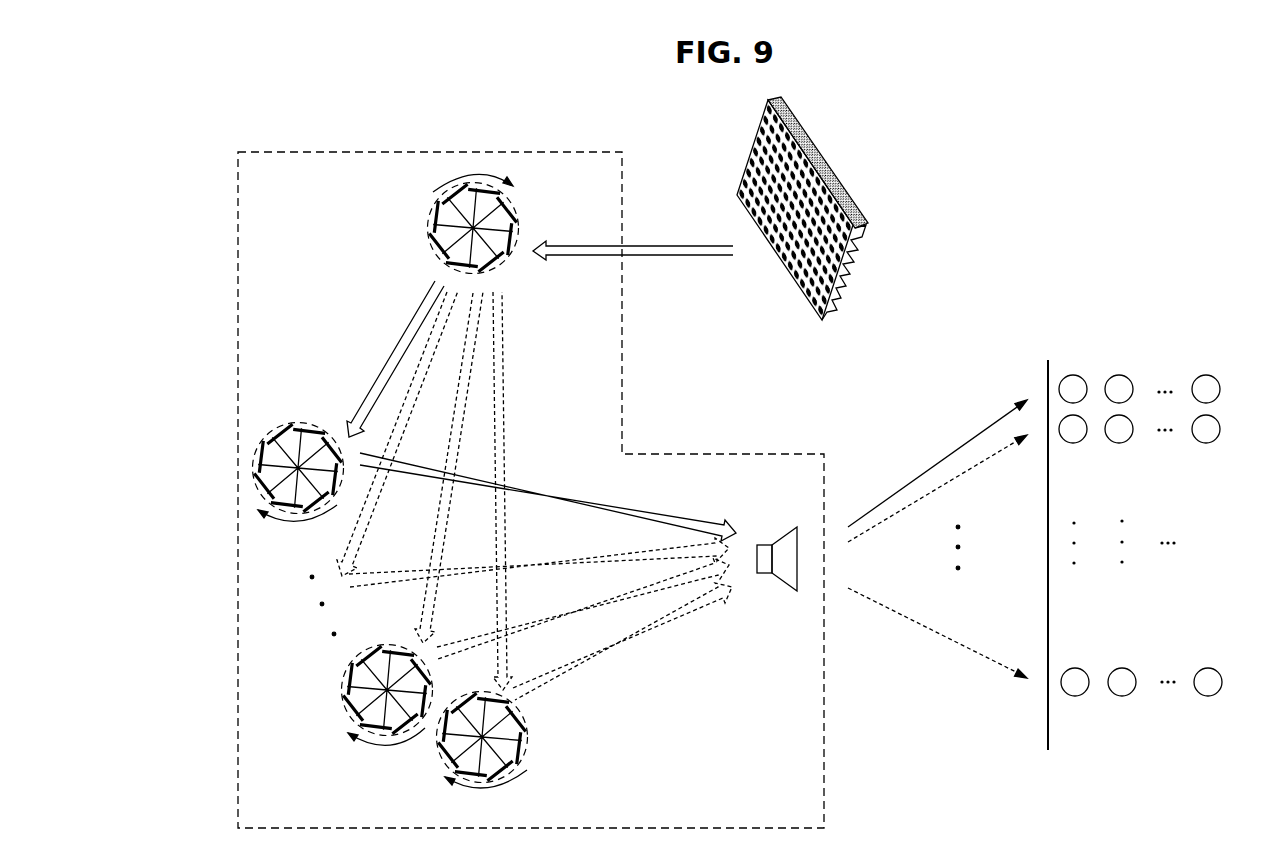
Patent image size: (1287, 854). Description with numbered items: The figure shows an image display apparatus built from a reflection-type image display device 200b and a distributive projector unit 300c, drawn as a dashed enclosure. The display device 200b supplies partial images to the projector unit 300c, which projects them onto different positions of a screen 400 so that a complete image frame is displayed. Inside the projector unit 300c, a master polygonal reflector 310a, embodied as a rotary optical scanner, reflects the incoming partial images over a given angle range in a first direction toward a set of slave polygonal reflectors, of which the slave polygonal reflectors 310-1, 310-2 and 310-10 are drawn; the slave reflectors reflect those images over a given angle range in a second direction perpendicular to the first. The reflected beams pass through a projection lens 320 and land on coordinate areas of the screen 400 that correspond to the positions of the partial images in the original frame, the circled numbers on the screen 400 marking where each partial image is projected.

The reflection-type image display device 200b is at (818, 153).
The distributive projector unit 300c is at (770, 455).
The master polygonal reflector 310a is at (433, 222).
The slave polygonal reflector 310-10 is at (290, 428).
The slave polygonal reflector 310-2 is at (347, 686).
The slave polygonal reflector 310-1 is at (517, 768).
The projection lens 320 is at (790, 585).
The screen 400 is at (1048, 714).